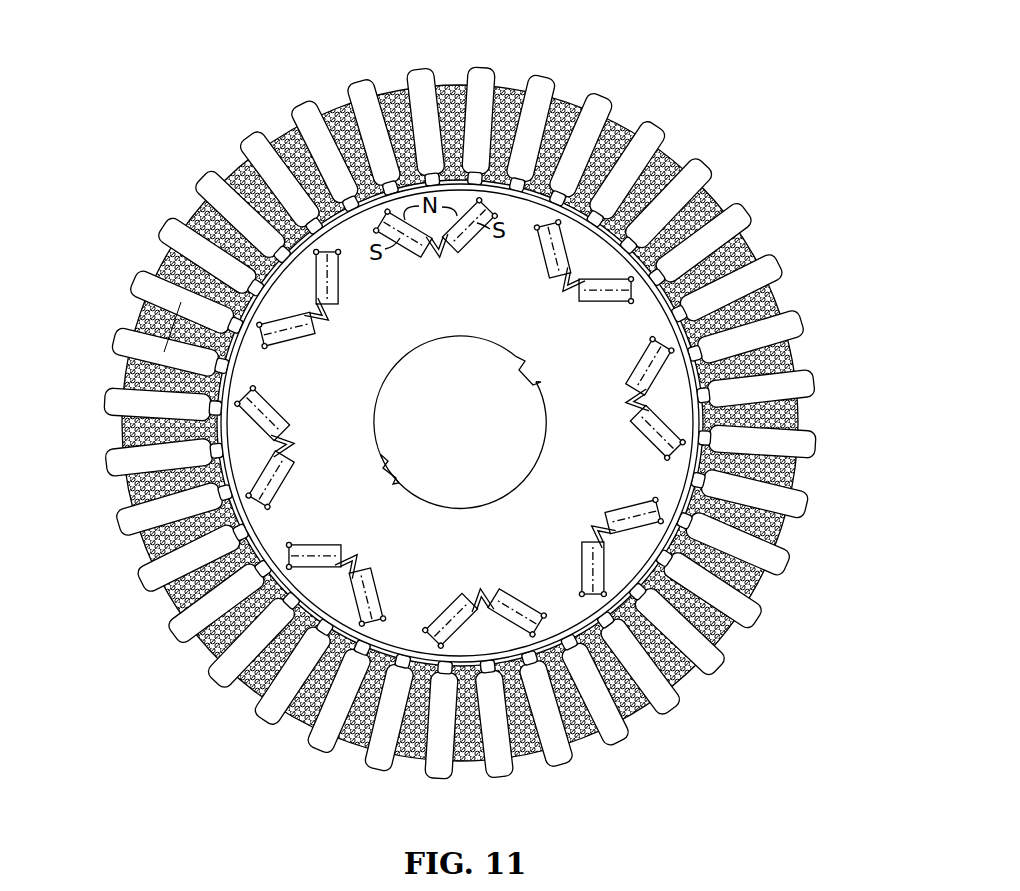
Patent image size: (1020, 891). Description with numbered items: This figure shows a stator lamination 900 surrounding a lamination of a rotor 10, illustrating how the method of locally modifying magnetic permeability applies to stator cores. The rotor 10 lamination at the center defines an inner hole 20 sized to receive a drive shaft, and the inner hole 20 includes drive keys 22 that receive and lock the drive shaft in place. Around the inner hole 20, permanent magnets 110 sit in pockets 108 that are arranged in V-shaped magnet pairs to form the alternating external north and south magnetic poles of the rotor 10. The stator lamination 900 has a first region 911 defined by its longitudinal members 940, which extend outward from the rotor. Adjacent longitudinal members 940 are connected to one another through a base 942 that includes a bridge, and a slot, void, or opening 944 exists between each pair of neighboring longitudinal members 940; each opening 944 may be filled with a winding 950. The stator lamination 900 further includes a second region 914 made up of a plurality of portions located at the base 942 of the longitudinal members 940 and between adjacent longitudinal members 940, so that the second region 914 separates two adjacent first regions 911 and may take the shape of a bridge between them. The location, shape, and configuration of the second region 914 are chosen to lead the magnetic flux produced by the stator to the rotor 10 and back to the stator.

The rotor 10 is at (587, 250).
The inner hole 20 is at (514, 484).
The drive keys 22 is at (533, 390).
The pockets 108 is at (425, 255).
The permanent magnets 110 is at (472, 252).
The stator lamination 900 is at (542, 76).
The first region 911 is at (130, 342).
The second region 914 is at (147, 403).
The longitudinal members 940 is at (145, 282).
The base 942 is at (327, 207).
The opening 944 is at (172, 325).
The winding 950 is at (162, 260).